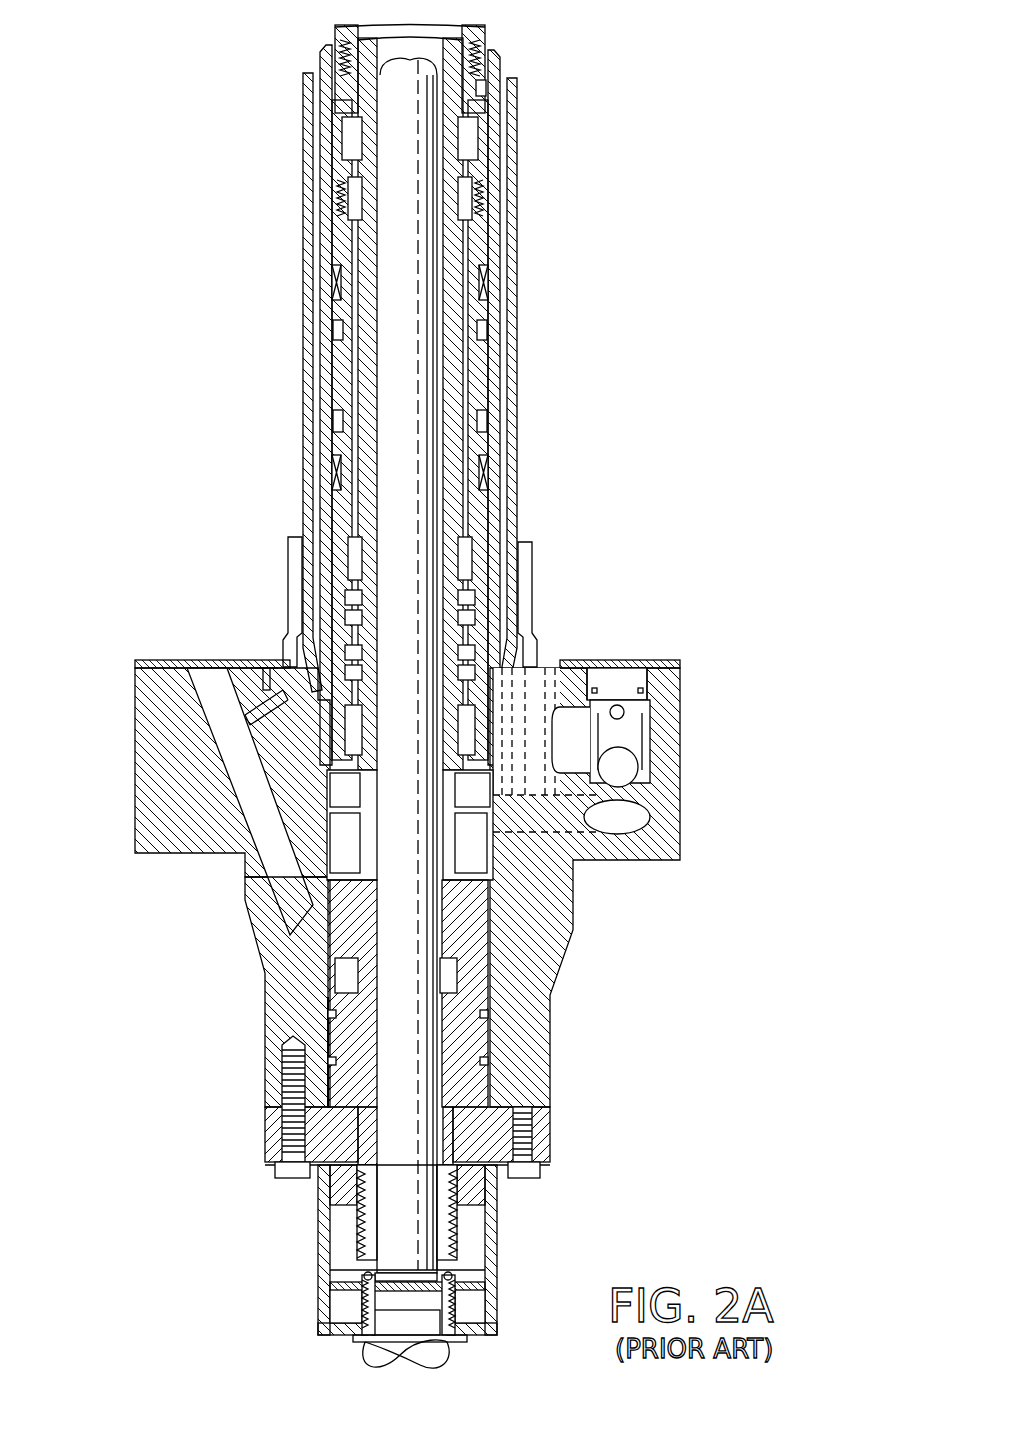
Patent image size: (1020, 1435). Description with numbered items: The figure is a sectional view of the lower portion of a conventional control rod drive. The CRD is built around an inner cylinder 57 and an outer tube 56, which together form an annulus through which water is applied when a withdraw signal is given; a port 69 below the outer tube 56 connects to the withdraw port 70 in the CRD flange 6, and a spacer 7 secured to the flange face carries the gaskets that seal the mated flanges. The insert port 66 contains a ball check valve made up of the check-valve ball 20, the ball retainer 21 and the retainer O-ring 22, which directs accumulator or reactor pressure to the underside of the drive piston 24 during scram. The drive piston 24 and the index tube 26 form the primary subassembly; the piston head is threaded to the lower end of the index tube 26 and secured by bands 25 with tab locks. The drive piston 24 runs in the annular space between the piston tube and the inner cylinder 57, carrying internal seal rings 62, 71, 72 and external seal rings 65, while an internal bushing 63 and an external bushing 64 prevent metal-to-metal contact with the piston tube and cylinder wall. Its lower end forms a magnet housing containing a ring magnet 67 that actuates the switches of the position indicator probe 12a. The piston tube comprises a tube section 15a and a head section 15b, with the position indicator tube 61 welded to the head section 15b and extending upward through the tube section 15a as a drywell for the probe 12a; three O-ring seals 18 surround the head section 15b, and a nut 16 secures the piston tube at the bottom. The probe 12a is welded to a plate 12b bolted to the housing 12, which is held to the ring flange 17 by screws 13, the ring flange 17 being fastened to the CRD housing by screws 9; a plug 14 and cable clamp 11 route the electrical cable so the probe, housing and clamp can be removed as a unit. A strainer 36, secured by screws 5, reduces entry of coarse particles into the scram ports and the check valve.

The screws 5 is at (270, 660).
The CRD flange 6 is at (133, 800).
The spacer 7 is at (150, 660).
The screws 9 is at (292, 1178).
The cable clamp 11 is at (365, 1352).
The housing 12 is at (496, 1296).
The position indicator probe 12a is at (432, 1266).
The plate 12b is at (320, 1276).
The screws 13 is at (527, 1178).
The plug 14 is at (440, 1319).
The tube section 15a is at (437, 789).
The head section 15b is at (437, 896).
The nut 16 is at (497, 1223).
The ring flange 17 is at (550, 1140).
The O-ring seals 18 is at (489, 1062).
The check-valve ball 20 is at (628, 770).
The ball retainer 21 is at (648, 746).
The retainer O-ring 22 is at (672, 682).
The drive piston 24 is at (335, 378).
The bands 25 is at (488, 88).
The index tube 26 is at (480, 33).
The strainer 36 is at (530, 580).
The outer tube 56 is at (518, 220).
The inner cylinder 57 is at (500, 383).
The position indicator tube 61 is at (421, 147).
The internal seal ring 62 is at (345, 172).
The internal bushing 63 is at (362, 196).
The external bushing 64 is at (490, 276).
The external seal rings 65 is at (484, 328).
The insert port 66 is at (623, 680).
The ring magnet 67 is at (362, 722).
The port 69 is at (218, 690).
The withdraw port 70 is at (215, 705).
The internal seal ring 71 is at (362, 670).
The internal seal ring 72 is at (362, 615).